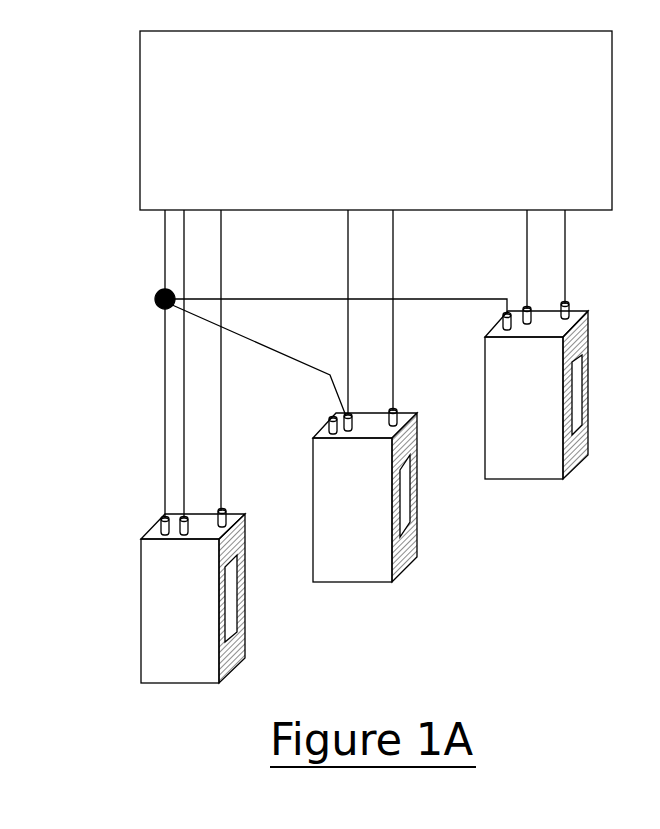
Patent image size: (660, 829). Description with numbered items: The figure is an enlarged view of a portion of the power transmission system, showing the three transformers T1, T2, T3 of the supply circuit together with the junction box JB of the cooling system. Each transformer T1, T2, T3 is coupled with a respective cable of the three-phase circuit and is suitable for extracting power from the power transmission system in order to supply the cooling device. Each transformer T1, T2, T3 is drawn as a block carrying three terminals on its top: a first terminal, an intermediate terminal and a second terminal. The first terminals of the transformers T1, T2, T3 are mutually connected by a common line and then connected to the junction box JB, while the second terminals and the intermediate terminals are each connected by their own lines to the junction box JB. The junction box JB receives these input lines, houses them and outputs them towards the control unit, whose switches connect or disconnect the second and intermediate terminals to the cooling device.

The junction box JB is at (376, 120).
The transformer T1 is at (193, 598).
The transformer T2 is at (365, 497).
The transformer T3 is at (536, 395).